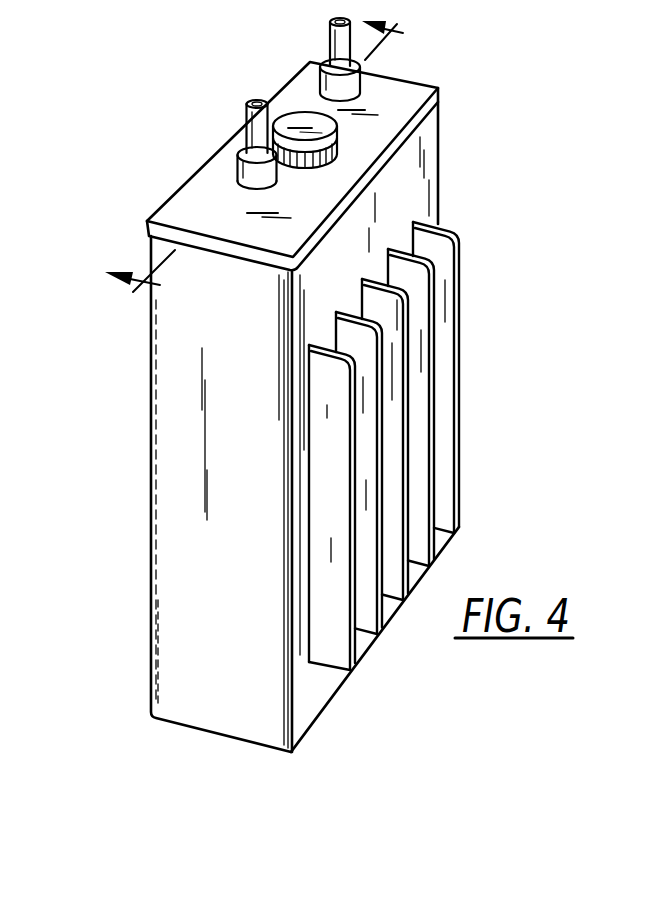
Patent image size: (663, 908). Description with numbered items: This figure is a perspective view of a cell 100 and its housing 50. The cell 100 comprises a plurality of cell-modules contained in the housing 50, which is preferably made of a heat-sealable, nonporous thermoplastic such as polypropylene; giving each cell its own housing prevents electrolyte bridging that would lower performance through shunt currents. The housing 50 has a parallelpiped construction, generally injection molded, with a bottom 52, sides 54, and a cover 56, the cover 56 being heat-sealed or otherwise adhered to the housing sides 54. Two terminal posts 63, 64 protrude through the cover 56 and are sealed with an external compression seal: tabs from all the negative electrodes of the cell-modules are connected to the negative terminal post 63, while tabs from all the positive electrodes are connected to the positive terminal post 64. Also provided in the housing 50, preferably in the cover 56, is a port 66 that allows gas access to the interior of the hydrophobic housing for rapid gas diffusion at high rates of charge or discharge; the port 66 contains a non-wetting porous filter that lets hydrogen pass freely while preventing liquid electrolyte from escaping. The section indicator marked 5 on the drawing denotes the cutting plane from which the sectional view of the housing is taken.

The cell 100 is at (132, 664).
The housing 50 is at (149, 387).
The bottom 52 is at (303, 731).
The sides 54 is at (183, 532).
The cover 56 is at (388, 110).
The terminal post 63 is at (329, 27).
The terminal post 64 is at (246, 108).
The port 66 is at (292, 123).
The section line for FIG. 5 is at (242, 152).